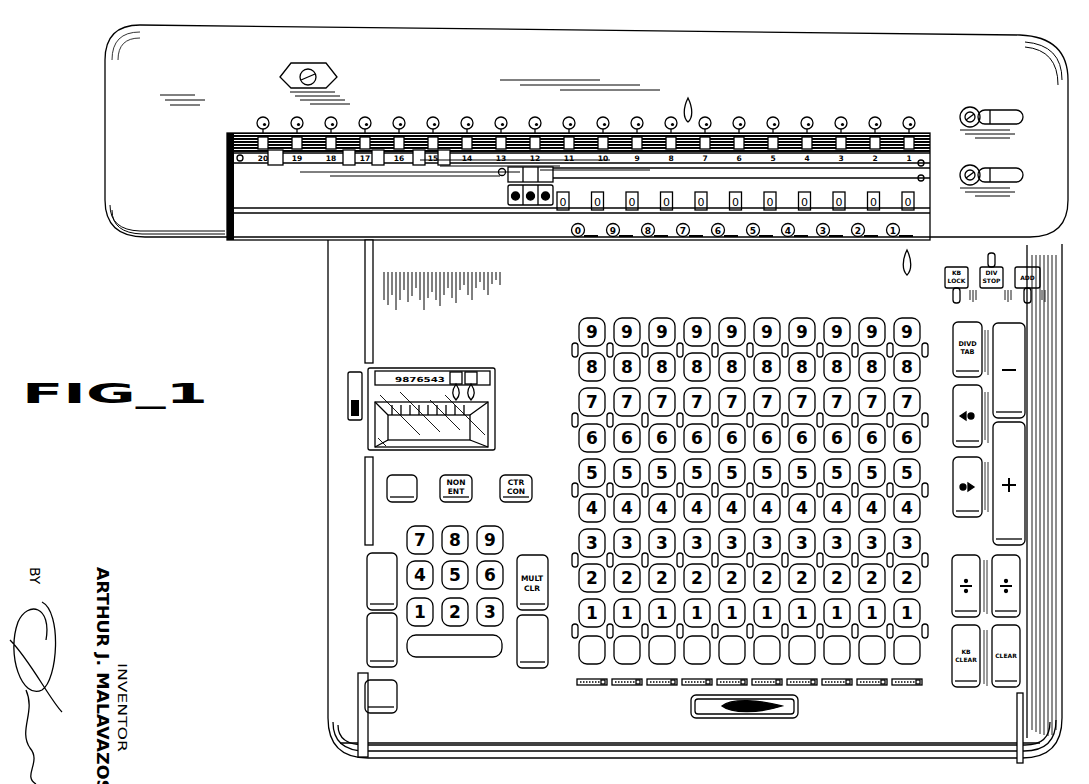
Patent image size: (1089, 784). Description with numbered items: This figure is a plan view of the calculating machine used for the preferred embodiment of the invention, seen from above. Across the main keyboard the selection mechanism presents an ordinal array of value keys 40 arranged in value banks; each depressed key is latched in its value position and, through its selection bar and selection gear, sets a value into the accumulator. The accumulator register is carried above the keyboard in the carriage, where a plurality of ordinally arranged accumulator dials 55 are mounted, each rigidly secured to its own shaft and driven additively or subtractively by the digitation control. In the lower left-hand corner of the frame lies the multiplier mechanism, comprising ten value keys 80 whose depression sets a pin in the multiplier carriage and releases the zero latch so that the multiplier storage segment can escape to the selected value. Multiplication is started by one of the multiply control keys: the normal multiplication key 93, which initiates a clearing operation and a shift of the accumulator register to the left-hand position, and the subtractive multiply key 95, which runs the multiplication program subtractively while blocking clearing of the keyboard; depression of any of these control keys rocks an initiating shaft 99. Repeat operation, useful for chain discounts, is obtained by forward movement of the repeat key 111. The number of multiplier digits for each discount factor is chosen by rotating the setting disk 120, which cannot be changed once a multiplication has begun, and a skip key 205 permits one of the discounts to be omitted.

The value keys 40 is at (803, 321).
The accumulator dials 55 is at (778, 140).
The value keys 80 is at (413, 535).
The normal multiplication key 93 is at (537, 669).
The subtractive multiply key 95 is at (367, 582).
The initiating shaft 99 is at (367, 656).
The repeat key 111 is at (387, 489).
The setting disk 120 is at (348, 392).
The skip key 205 is at (392, 701).